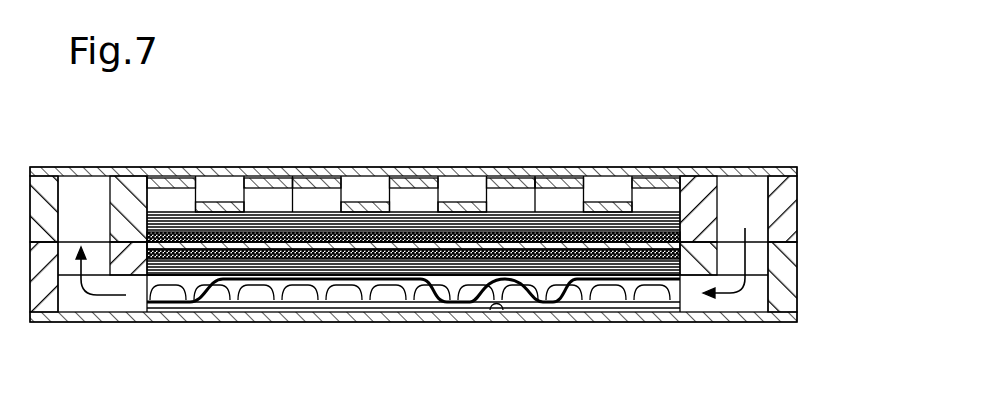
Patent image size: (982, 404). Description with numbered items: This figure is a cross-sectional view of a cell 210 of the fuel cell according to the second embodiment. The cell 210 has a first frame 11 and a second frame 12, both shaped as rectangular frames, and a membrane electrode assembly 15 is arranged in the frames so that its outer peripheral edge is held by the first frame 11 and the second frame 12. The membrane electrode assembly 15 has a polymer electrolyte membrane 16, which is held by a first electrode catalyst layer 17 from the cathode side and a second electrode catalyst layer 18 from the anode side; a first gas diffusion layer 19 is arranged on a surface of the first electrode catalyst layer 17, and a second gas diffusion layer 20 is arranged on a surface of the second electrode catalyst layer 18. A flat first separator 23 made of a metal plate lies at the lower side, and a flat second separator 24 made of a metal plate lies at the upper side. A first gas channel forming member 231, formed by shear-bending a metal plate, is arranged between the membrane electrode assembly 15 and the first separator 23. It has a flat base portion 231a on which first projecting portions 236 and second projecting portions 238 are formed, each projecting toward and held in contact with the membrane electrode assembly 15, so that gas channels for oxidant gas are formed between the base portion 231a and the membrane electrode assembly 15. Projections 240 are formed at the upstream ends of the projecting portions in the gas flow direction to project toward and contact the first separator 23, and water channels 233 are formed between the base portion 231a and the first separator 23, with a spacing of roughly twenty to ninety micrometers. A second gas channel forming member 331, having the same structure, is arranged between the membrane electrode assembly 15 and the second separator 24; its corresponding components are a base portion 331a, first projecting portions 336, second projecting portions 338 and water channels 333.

The cell 210 is at (779, 111).
The second frame 12 is at (793, 199).
The first frame 11 is at (793, 273).
The second separator 24 is at (443, 173).
The first separator 23 is at (384, 318).
The membrane electrode assembly 15 is at (413, 166).
The first gas diffusion layer 19 is at (425, 86).
The first electrode catalyst layer 17 is at (277, 235).
The polymer electrolyte membrane 16 is at (322, 245).
The second electrode catalyst layer 18 is at (371, 255).
The second gas diffusion layer 20 is at (417, 225).
The second projecting portion of the second gas channel forming member 338 is at (201, 183).
The first projecting portion of the second gas channel forming member 336 is at (617, 198).
The water channel of the second gas channel forming member 333 is at (515, 178).
The second gas channel forming member 331 is at (374, 185).
The base portion of the second gas channel forming member 331a is at (163, 180).
The first gas channel forming member 231 is at (361, 296).
The base portion 231a is at (640, 303).
The second projecting portion 238 is at (283, 282).
The projection 240 is at (445, 303).
The water channel 233 is at (498, 311).
The first projecting portion 236 is at (544, 295).